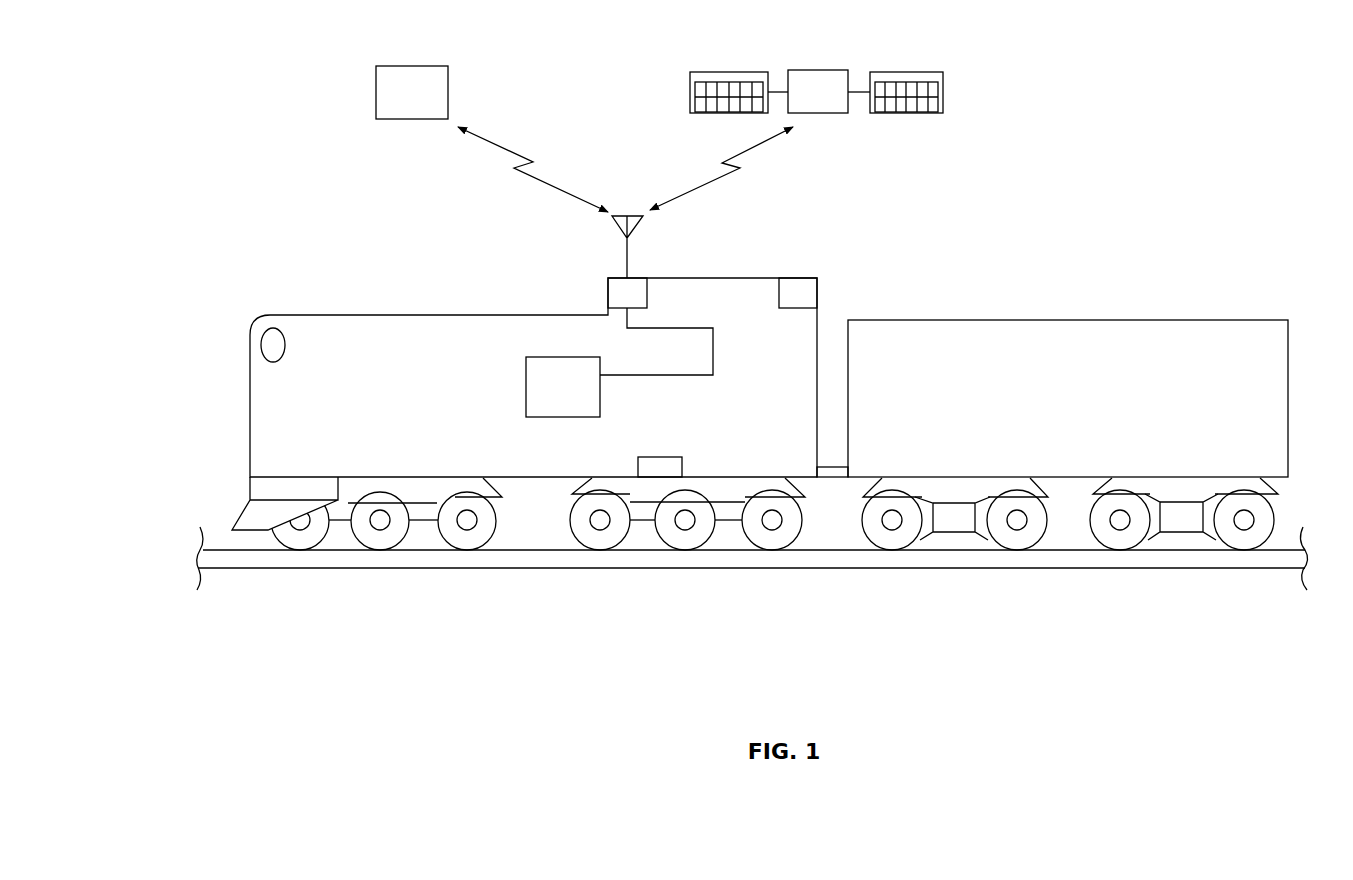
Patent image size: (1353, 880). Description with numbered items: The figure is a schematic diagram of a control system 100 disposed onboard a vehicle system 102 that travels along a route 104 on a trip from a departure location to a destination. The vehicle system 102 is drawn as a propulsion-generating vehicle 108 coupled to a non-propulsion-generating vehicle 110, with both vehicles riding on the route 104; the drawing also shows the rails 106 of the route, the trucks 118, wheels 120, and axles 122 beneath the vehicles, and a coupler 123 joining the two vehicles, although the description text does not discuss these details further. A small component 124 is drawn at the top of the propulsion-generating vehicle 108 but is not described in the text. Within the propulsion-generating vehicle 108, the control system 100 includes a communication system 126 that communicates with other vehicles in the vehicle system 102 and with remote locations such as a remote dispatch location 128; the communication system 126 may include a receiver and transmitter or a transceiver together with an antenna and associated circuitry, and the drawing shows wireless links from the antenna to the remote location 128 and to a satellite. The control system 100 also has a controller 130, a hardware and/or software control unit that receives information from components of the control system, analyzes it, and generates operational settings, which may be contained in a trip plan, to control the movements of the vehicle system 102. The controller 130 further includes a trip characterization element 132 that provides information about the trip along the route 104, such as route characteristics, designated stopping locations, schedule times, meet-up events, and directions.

The control system 100 is at (455, 248).
The vehicle system 102 is at (1068, 365).
The route 104 is at (729, 577).
The rail 106 is at (421, 568).
The propulsion-generating vehicle 108 is at (412, 315).
The non-propulsion-generating vehicle 110 is at (1112, 417).
The truck 118 is at (723, 490).
The wheel 120 is at (575, 527).
The axle 122 is at (600, 528).
The coupler 123 is at (845, 472).
The brake system 124 is at (797, 293).
The communication system 126 is at (608, 293).
The remote location 128 is at (412, 66).
The controller 130 is at (562, 357).
The trip characterization element 132 is at (526, 372).